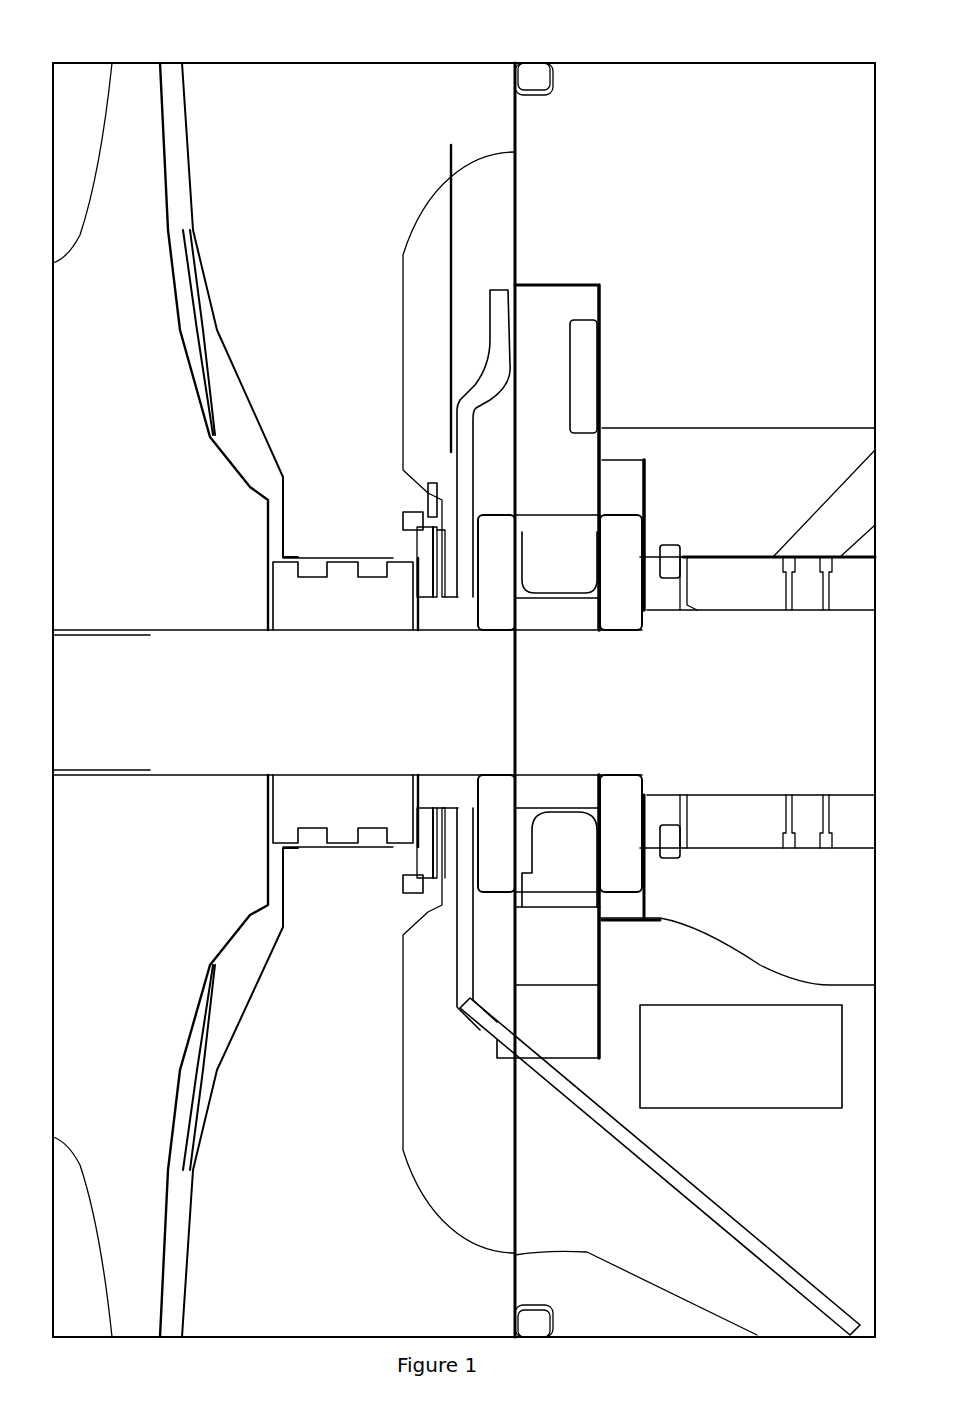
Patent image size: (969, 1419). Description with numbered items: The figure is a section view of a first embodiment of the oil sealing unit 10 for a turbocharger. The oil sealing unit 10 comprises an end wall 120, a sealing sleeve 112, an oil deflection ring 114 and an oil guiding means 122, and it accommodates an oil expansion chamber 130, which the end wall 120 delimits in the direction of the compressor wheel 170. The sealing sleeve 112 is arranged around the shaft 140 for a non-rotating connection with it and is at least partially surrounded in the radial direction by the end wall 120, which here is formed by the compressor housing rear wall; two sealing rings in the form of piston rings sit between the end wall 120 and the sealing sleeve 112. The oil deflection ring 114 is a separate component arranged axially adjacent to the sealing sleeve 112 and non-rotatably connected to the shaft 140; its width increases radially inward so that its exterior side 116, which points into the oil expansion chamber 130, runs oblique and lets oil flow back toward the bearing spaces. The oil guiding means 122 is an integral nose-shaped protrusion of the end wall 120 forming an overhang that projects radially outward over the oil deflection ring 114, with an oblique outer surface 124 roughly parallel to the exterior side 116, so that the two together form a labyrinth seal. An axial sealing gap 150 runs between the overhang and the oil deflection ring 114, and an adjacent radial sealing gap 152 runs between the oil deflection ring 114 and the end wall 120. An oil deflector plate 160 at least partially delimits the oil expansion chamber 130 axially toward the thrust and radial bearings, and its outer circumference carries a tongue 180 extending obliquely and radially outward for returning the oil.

The oil sealing unit 10 is at (352, 36).
The sealing sleeve 112 is at (350, 603).
The oil deflection ring 114 is at (433, 613).
The exterior side 116 is at (447, 547).
The end wall 120 is at (342, 304).
The oil guiding means 122 is at (420, 490).
The oblique outer surface 124 is at (430, 490).
The oil expansion chamber 130 is at (437, 243).
The shaft 140 is at (797, 709).
The sealing gap 150 is at (417, 515).
The sealing gap 152 is at (415, 540).
The oil deflector plate 160 is at (500, 305).
The compressor wheel 170 is at (160, 530).
The tongue 180 is at (610, 1125).